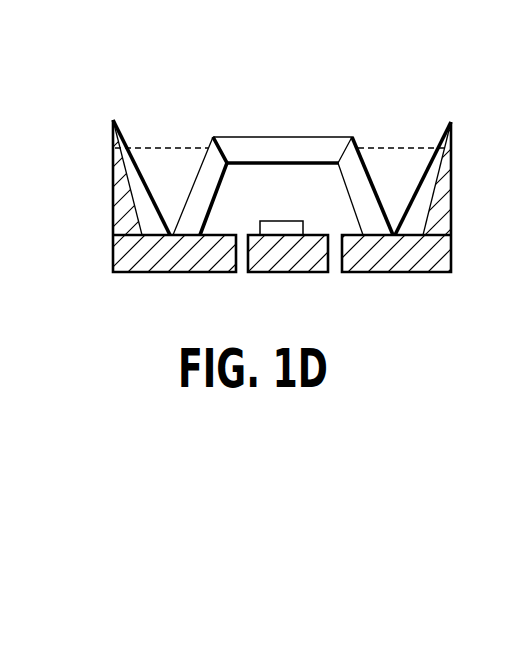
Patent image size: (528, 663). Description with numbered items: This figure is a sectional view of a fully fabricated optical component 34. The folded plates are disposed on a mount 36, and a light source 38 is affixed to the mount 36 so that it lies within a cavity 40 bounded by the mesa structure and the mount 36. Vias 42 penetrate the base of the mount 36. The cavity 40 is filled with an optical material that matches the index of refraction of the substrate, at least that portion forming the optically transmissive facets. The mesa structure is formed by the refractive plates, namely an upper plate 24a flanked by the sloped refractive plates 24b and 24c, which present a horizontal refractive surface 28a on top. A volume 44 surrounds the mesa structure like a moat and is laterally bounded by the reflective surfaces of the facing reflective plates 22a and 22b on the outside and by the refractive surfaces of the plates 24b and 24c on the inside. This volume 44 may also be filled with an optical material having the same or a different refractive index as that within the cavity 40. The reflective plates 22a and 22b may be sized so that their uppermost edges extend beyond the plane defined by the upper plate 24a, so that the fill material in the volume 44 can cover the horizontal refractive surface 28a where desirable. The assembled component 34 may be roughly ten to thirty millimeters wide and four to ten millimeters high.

The optical component 34 is at (316, 46).
The reflective plate 22a is at (117, 150).
The reflective plate 22b is at (453, 152).
The volume 44 is at (168, 165).
The upper plate 24a is at (253, 152).
The refractive plate 24b is at (208, 168).
The refractive plate 24c is at (353, 170).
The horizontal refractive surface 28a is at (288, 136).
The cavity 40 is at (265, 205).
The light source 38 is at (293, 228).
The vias 42 is at (240, 260).
The mount 36 is at (443, 250).